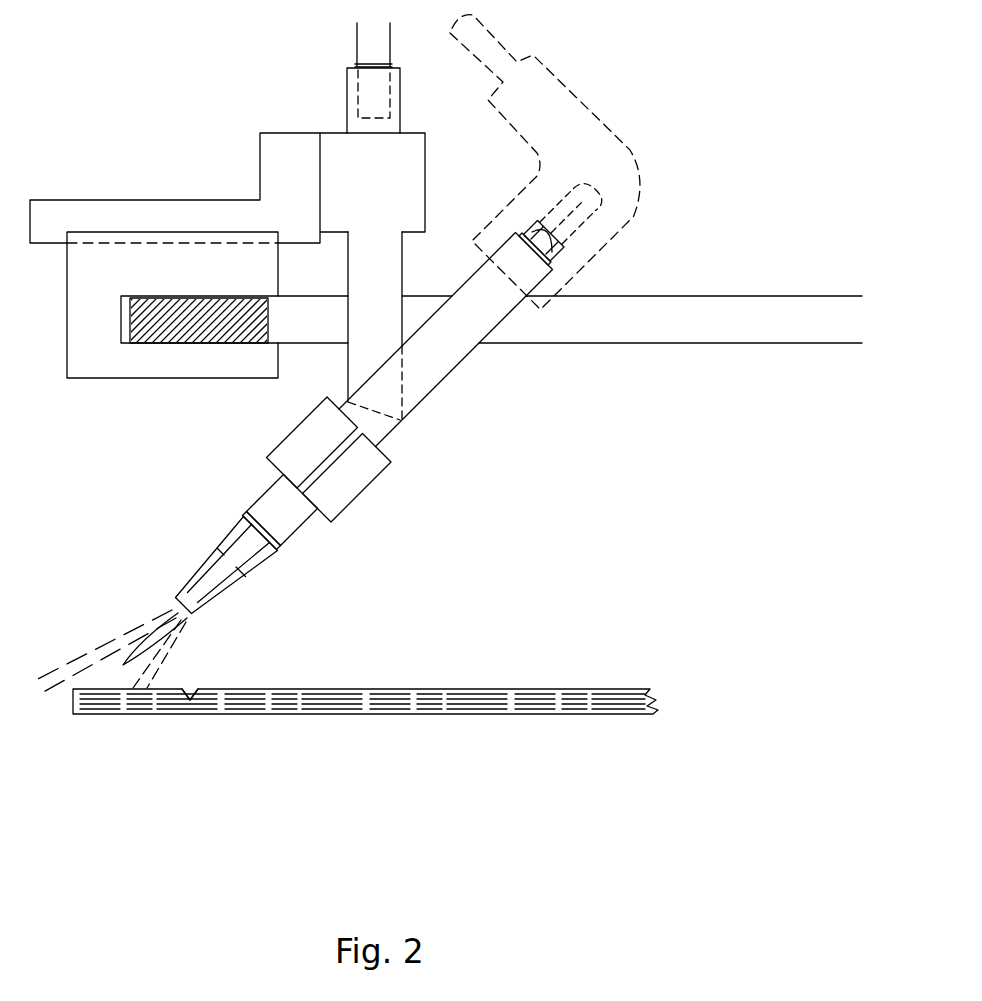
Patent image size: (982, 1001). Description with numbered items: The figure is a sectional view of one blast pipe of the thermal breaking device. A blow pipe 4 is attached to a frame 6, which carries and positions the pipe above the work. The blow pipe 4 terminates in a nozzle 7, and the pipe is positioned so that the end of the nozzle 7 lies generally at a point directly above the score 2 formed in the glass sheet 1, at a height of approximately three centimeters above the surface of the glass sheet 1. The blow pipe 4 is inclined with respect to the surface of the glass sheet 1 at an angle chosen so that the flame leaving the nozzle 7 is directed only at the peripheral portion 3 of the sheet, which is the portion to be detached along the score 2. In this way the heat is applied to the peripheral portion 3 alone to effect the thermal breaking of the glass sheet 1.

The glass sheet 1 is at (490, 705).
The score 2 is at (199, 686).
The peripheral portion 3 is at (137, 707).
The blow pipe 4 is at (335, 498).
The frame 6 is at (686, 328).
The nozzle 7 is at (205, 611).